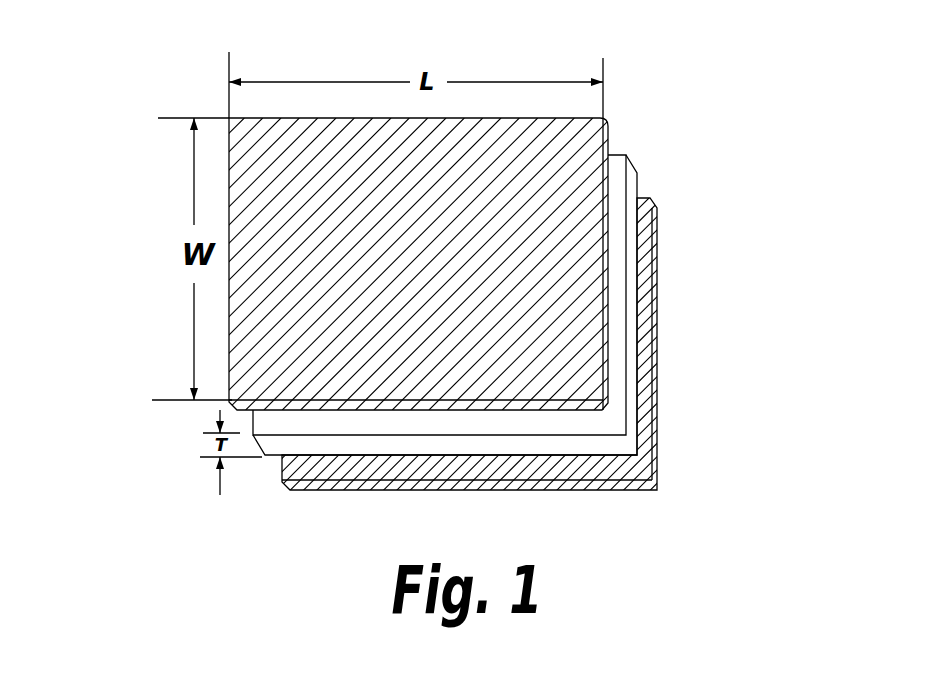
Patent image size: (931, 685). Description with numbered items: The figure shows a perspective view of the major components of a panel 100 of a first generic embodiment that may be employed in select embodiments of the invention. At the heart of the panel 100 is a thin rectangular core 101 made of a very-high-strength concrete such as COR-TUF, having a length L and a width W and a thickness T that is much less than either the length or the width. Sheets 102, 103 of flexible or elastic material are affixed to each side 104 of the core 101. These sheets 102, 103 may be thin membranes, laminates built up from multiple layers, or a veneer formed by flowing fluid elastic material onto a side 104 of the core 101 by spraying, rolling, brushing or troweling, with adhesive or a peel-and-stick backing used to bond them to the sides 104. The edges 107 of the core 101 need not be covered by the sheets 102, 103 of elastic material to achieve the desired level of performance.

The panel 100 is at (203, 42).
The core 101 is at (635, 167).
The sheet of elastic material 102 is at (663, 295).
The sheet of elastic material 103 is at (230, 117).
The side of the core 104 is at (433, 420).
The edges of the core 107 is at (600, 447).